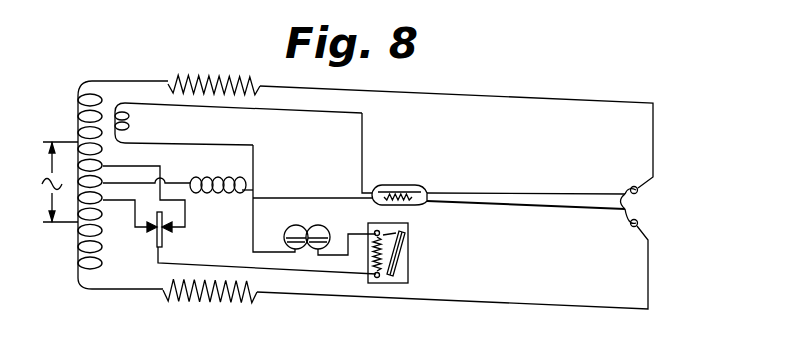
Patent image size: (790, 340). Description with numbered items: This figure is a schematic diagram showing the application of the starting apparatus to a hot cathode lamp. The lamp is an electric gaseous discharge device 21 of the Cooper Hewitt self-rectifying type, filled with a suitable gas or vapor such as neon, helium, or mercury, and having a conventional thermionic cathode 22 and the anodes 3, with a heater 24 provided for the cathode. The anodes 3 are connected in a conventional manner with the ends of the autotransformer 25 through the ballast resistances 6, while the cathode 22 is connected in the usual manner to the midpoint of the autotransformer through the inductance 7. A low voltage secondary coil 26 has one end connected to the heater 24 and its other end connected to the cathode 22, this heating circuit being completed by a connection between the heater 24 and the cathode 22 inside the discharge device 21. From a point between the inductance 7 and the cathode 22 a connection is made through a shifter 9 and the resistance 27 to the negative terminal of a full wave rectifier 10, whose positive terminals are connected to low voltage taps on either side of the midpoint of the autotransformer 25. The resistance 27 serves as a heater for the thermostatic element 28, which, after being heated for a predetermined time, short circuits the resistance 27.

The anodes 3 is at (633, 208).
The ballast resistances 6 is at (232, 76).
The inductance 7 is at (228, 177).
The shifter 9 is at (298, 226).
The full wave rectifier 10 is at (157, 232).
The electric gaseous discharge device 21 is at (527, 202).
The thermionic cathode 22 is at (393, 186).
The heater 24 is at (407, 192).
The autotransformer 25 is at (78, 108).
The low voltage secondary coil 26 is at (129, 117).
The resistance 27 is at (378, 243).
The thermostatic element 28 is at (402, 257).